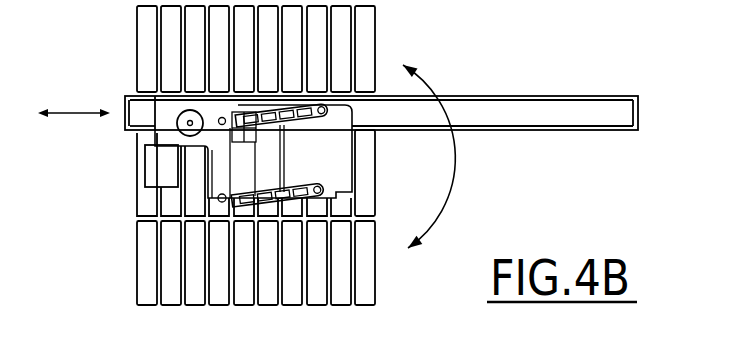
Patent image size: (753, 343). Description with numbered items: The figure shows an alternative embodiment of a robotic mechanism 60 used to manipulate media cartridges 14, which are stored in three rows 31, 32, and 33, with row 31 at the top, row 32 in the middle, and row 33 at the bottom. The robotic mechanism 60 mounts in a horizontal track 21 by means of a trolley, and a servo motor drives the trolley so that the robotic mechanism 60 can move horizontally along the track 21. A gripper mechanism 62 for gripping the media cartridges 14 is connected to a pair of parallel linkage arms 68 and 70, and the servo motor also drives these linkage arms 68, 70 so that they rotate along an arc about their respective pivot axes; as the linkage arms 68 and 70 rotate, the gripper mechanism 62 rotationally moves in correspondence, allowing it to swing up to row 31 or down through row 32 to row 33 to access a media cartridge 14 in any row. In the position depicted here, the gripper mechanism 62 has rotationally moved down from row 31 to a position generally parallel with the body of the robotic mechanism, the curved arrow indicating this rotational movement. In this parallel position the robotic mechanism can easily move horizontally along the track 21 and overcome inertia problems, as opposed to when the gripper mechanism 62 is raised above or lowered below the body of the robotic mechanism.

The media cartridge 14 is at (365, 40).
The track 21 is at (575, 108).
The row 31 is at (252, 49).
The row 32 is at (129, 173).
The row 33 is at (128, 258).
The robotic mechanism 60 is at (166, 131).
The gripper mechanism 62 is at (325, 155).
The linkage arm 68 is at (326, 116).
The linkage arm 70 is at (315, 195).